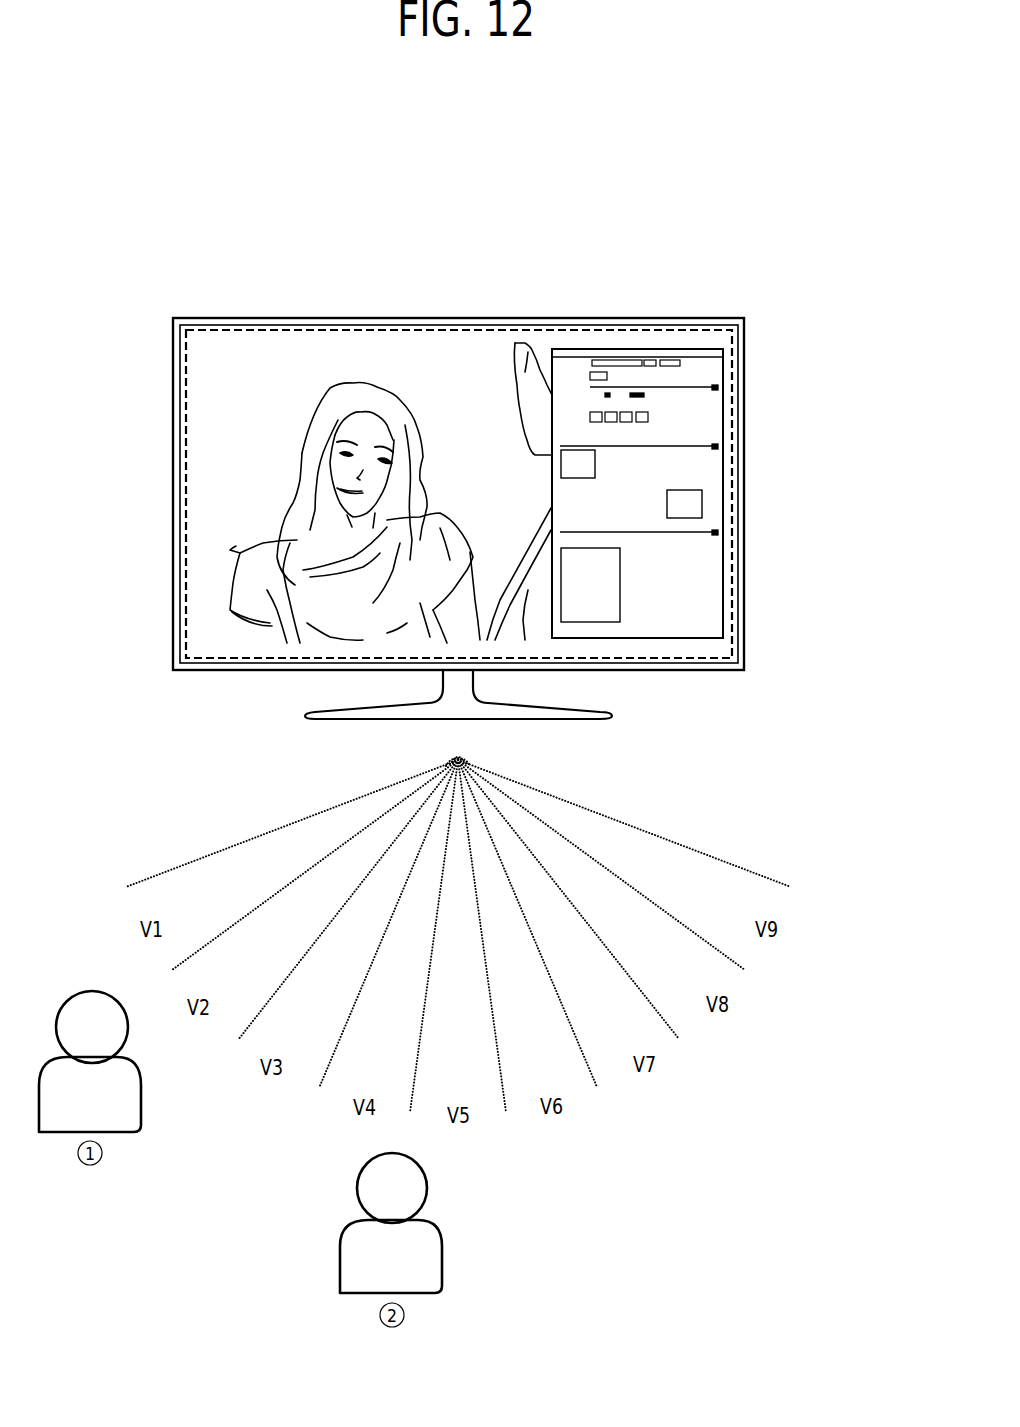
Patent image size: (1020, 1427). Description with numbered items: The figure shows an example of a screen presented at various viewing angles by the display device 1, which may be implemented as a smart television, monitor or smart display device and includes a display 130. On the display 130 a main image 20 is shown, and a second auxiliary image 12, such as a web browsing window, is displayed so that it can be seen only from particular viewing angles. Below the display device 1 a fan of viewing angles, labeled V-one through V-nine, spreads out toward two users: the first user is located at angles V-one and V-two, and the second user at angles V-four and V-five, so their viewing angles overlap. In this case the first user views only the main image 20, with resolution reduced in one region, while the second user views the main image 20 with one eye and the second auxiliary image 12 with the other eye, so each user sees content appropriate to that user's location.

The display device 1 is at (688, 306).
The second auxiliary image 12 is at (634, 349).
The main image 20 is at (357, 332).
The display 130 is at (452, 318).